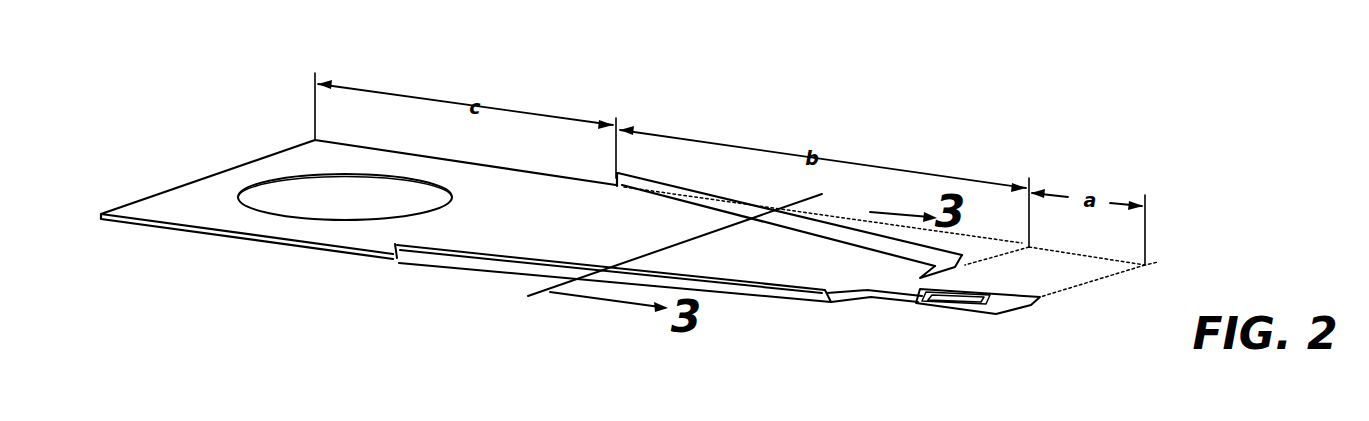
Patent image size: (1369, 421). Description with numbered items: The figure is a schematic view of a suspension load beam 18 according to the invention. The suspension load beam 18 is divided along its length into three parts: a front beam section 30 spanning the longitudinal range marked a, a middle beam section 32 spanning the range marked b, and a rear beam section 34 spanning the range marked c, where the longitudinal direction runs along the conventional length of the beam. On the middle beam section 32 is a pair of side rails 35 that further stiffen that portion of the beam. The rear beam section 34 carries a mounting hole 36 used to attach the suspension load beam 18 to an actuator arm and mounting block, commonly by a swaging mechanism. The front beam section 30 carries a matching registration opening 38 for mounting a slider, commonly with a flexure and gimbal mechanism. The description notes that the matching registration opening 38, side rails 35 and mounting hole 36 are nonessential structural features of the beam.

The suspension load beam 18 is at (581, 201).
The front beam section 30 is at (907, 306).
The middle beam section 32 is at (819, 217).
The rear beam section 34 is at (422, 161).
The side rails 35 is at (932, 249).
The mounting hole 36 is at (322, 207).
The matching registration opening 38 is at (920, 294).